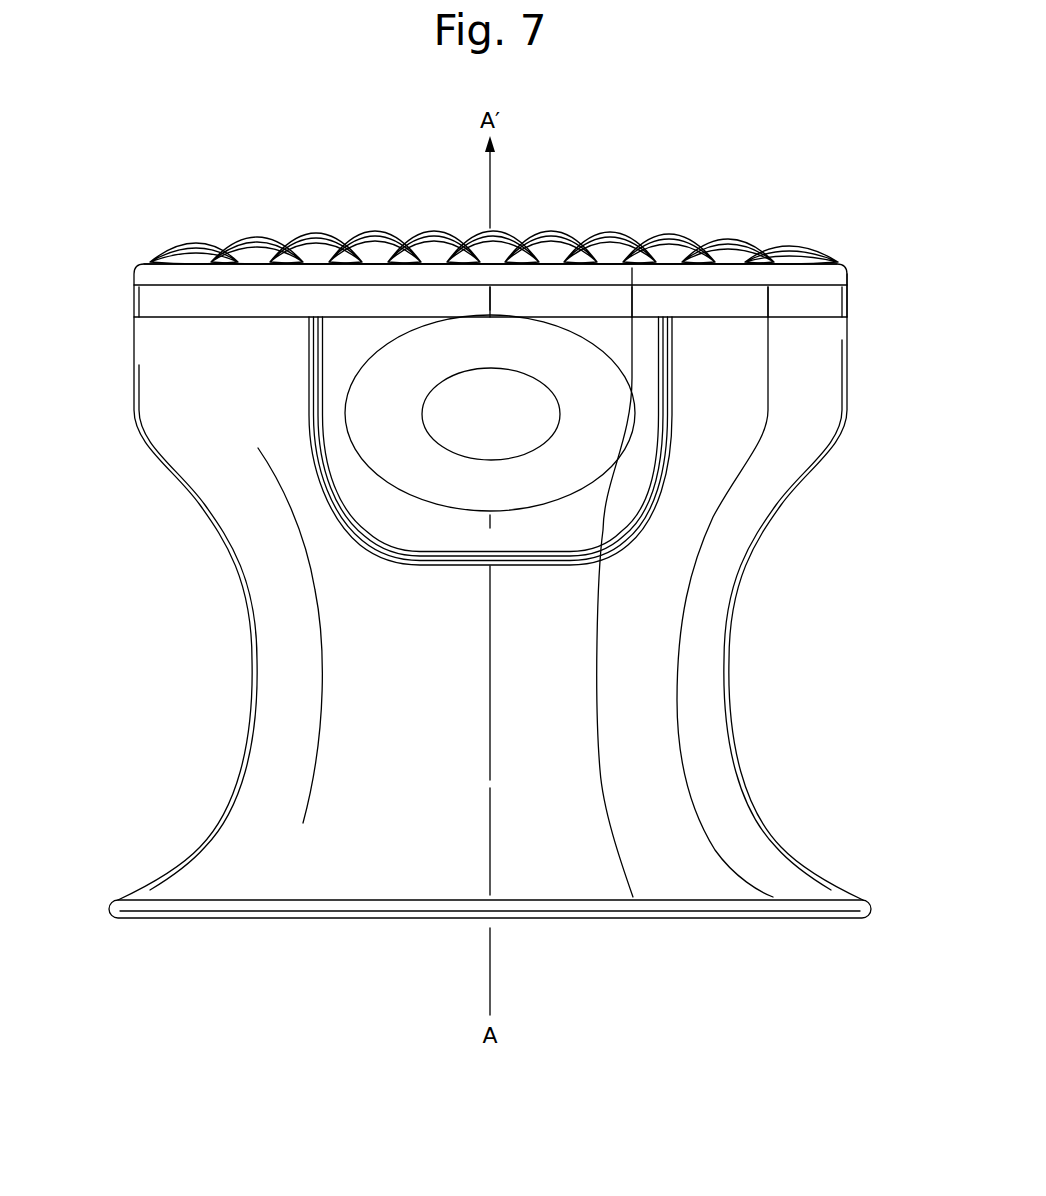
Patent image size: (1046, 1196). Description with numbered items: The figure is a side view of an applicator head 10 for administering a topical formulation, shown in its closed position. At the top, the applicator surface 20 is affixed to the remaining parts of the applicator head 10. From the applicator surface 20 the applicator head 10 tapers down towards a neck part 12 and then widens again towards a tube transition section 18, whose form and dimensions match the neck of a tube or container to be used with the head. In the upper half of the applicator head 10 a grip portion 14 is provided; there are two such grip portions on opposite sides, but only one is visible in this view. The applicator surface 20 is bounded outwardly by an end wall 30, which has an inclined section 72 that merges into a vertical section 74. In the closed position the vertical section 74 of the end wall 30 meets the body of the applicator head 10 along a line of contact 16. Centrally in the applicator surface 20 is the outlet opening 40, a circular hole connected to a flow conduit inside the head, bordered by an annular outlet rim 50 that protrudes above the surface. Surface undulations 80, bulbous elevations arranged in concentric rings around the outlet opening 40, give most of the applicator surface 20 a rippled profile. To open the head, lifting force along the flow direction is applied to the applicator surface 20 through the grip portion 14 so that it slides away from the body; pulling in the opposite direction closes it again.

The applicator head 10 is at (156, 536).
The neck part 12 is at (285, 697).
The grip portion 14 is at (607, 445).
The line of contact 16 is at (823, 318).
The tube transition section 18 is at (192, 905).
The applicator surface 20 is at (148, 257).
The end wall 30 is at (157, 299).
The outlet opening 40 is at (503, 232).
The outlet rim 50 is at (522, 232).
The inclined section 72 is at (822, 270).
The vertical section 74 is at (825, 300).
The surface undulations 80 is at (215, 245).